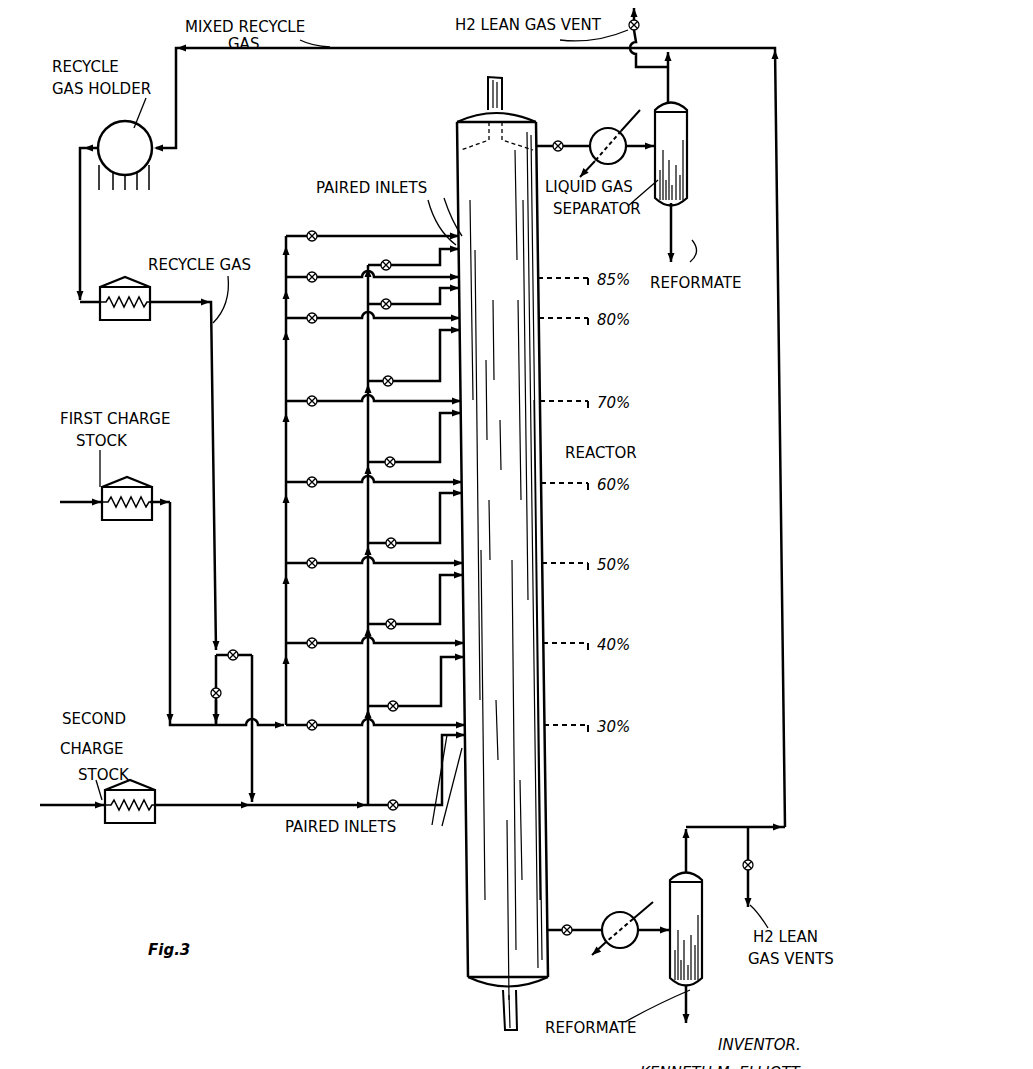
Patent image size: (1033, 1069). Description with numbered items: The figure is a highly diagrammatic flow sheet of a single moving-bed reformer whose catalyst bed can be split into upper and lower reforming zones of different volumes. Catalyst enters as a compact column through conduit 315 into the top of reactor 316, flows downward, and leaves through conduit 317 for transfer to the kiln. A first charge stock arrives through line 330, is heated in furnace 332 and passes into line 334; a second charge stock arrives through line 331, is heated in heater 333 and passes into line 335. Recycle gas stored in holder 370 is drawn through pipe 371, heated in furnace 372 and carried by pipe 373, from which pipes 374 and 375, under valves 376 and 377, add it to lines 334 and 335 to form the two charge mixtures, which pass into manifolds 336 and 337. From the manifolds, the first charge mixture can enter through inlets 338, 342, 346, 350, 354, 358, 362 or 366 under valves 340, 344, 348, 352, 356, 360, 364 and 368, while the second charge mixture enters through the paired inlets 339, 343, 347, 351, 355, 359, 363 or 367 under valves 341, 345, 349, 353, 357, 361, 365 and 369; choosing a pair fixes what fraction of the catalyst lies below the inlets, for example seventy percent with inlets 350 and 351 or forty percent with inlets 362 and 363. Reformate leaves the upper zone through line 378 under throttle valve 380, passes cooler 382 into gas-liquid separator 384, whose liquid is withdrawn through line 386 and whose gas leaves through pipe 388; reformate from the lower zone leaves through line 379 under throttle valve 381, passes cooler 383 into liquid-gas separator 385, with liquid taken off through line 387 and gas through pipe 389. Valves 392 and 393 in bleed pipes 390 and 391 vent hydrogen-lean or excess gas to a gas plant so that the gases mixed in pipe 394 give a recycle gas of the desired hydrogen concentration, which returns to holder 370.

The conduit 315 is at (487, 96).
The reactor 316 is at (502, 556).
The conduit 317 is at (512, 1012).
The line 330 is at (64, 504).
The line 331 is at (96, 806).
The furnace 332 is at (104, 524).
The heater 333 is at (108, 828).
The line 334 is at (173, 572).
The line 335 is at (173, 808).
The manifold 336 is at (285, 524).
The manifold 337 is at (366, 779).
The charge mixture inlet 338 is at (361, 233).
The charge mixture inlet 339 is at (428, 253).
The valve 340 is at (315, 233).
The valve 341 is at (388, 253).
The charge mixture inlet 342 is at (358, 272).
The charge mixture inlet 343 is at (436, 295).
The valve 344 is at (321, 272).
The valve 345 is at (403, 295).
The charge mixture inlet 346 is at (327, 330).
The charge mixture inlet 347 is at (436, 343).
The valve 348 is at (315, 316).
The valve 349 is at (387, 380).
The charge mixture inlet 350 is at (320, 411).
The charge mixture inlet 351 is at (436, 425).
The valve 352 is at (315, 398).
The valve 353 is at (388, 461).
The charge mixture inlet 354 is at (320, 492).
The charge mixture inlet 355 is at (436, 506).
The valve 356 is at (315, 479).
The valve 357 is at (391, 542).
The charge mixture inlet 358 is at (320, 573).
The charge mixture inlet 359 is at (436, 587).
The valve 360 is at (315, 560).
The valve 361 is at (391, 623).
The charge mixture inlet 362 is at (320, 653).
The charge mixture inlet 363 is at (436, 667).
The valve 364 is at (315, 640).
The valve 365 is at (391, 705).
The charge mixture inlet 366 is at (320, 735).
The charge mixture inlet 367 is at (436, 756).
The valve 368 is at (315, 722).
The valve 369 is at (391, 803).
The holder 370 is at (132, 120).
The pipe 371 is at (85, 226).
The furnace 372 is at (134, 328).
The pipe 373 is at (202, 303).
The pipe 374 is at (210, 713).
The pipe 375 is at (254, 772).
The valve 376 is at (210, 693).
The valve 377 is at (240, 652).
The line 378 is at (577, 143).
The line 379 is at (586, 934).
The throttle valve 380 is at (557, 158).
The throttle valve 381 is at (570, 925).
The cooler 382 is at (620, 114).
The cooler 383 is at (641, 904).
The gas-liquid separator 384 is at (687, 133).
The liquid-gas separator 385 is at (702, 934).
The line 386 is at (684, 230).
The line 387 is at (690, 999).
The pipe 388 is at (676, 78).
The pipe 389 is at (731, 824).
The pipe 390 is at (630, 62).
The pipe 391 is at (752, 895).
The valve 392 is at (640, 25).
The valve 393 is at (754, 865).
The pipe 394 is at (386, 47).